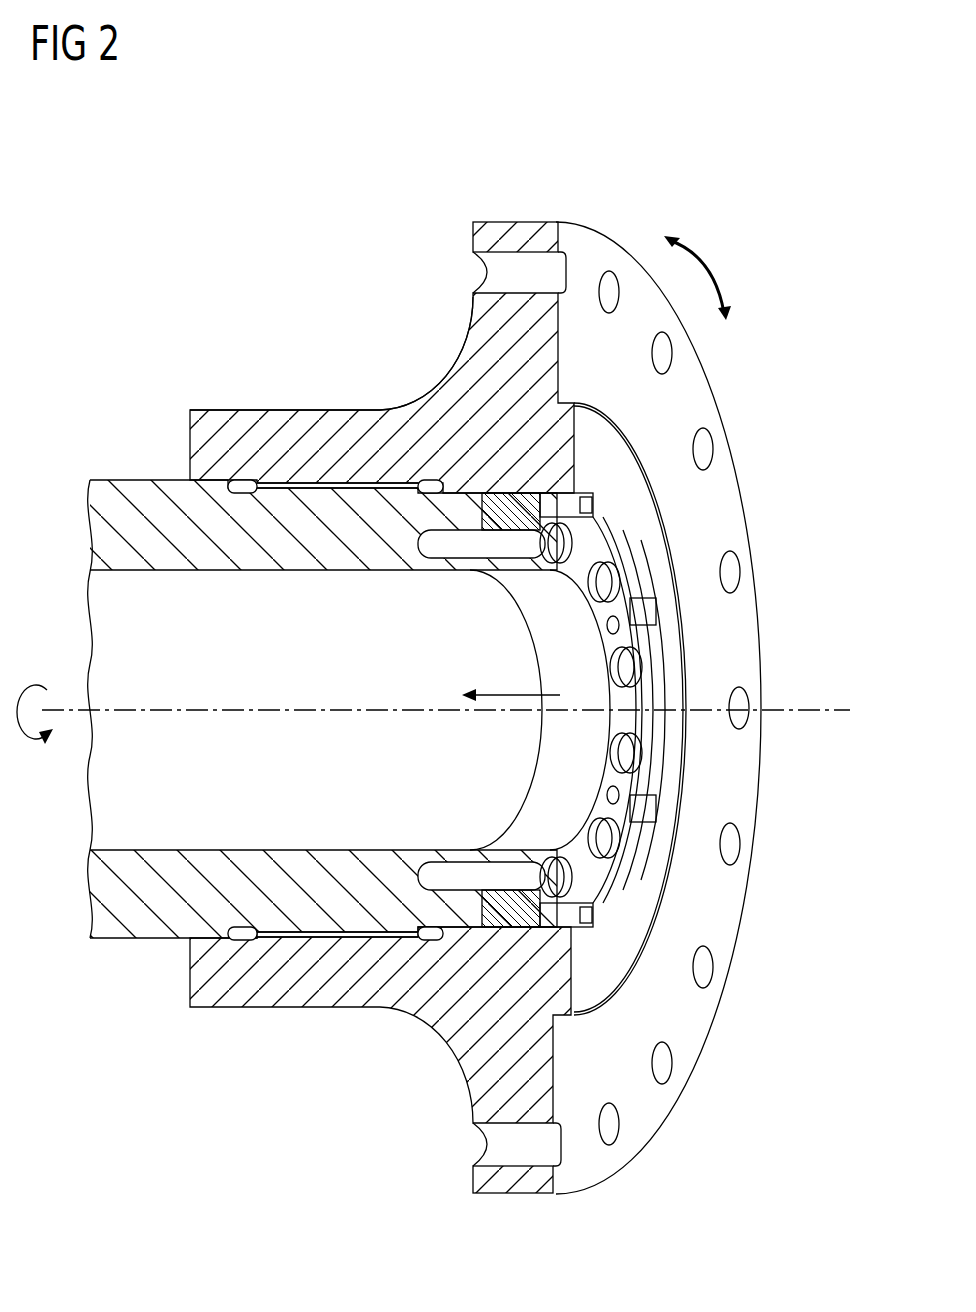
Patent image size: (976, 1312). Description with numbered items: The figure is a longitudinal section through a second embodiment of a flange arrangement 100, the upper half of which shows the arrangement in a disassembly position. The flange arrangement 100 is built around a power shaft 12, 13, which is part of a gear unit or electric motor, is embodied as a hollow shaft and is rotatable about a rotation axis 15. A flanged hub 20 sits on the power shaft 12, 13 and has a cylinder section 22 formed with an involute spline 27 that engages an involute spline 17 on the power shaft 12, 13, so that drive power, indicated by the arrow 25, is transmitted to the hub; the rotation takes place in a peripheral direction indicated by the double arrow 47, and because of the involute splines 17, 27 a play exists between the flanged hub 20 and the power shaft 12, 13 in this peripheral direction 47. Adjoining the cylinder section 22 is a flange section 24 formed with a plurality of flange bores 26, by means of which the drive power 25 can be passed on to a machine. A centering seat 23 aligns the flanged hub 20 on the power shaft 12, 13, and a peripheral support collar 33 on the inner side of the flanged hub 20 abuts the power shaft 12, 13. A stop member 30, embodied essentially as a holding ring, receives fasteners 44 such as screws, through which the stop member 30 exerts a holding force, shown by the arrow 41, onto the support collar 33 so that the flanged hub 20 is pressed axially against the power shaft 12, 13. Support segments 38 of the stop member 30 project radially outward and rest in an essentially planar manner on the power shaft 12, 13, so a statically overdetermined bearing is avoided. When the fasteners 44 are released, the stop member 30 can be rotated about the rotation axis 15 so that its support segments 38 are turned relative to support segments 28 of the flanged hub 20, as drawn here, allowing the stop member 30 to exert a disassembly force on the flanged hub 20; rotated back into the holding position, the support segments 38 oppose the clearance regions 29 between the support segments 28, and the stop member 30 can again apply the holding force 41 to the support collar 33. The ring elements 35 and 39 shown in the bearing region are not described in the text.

The flange arrangement 100 is at (460, 126).
The power shaft 12 is at (349, 672).
The hollow shaft 13 is at (136, 495).
The rotation axis 15 is at (60, 714).
The involute spline 17 is at (382, 708).
The flanged hub 20 is at (420, 396).
The cylinder section 22 is at (255, 407).
The centering seat 23 is at (214, 946).
The flange section 24 is at (583, 243).
The drive power 25 is at (33, 670).
The flange bores 26 is at (703, 448).
The involute spline 27 is at (324, 940).
The support segments 28 is at (644, 812).
The clearance regions 29 is at (657, 663).
The stop member 30 is at (627, 698).
The support collar 33 is at (483, 522).
The bearing race 35 is at (667, 603).
The support segments 38 is at (618, 530).
The outer bearing ring 39 is at (576, 488).
The holding force 41 is at (488, 692).
The fasteners 44 is at (452, 860).
The peripheral direction 47 is at (708, 267).